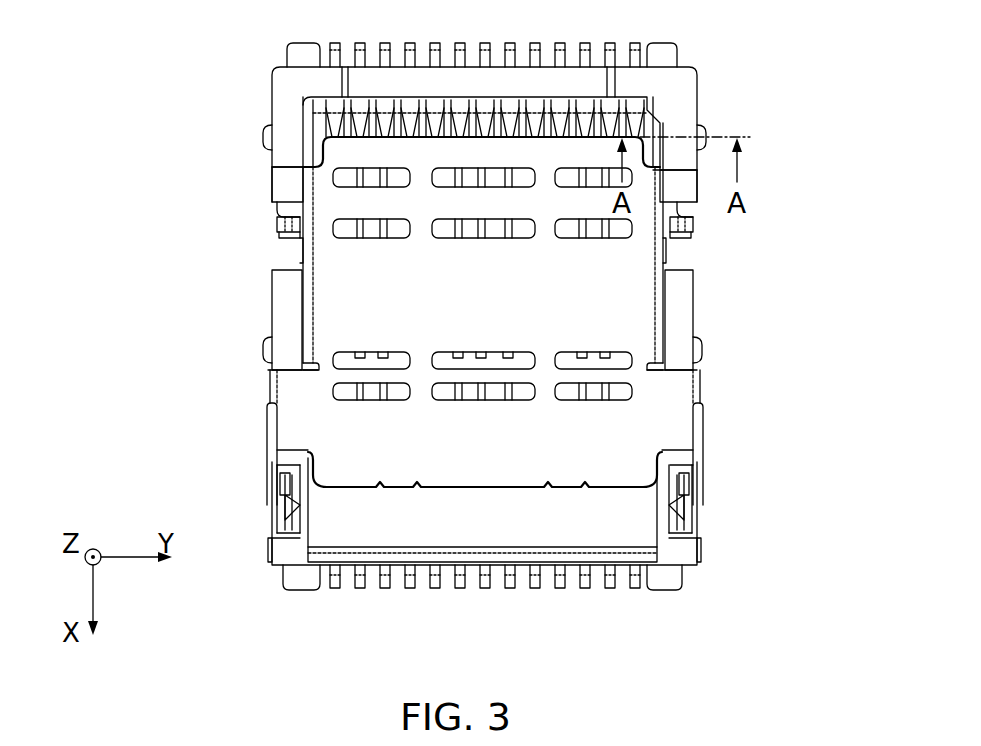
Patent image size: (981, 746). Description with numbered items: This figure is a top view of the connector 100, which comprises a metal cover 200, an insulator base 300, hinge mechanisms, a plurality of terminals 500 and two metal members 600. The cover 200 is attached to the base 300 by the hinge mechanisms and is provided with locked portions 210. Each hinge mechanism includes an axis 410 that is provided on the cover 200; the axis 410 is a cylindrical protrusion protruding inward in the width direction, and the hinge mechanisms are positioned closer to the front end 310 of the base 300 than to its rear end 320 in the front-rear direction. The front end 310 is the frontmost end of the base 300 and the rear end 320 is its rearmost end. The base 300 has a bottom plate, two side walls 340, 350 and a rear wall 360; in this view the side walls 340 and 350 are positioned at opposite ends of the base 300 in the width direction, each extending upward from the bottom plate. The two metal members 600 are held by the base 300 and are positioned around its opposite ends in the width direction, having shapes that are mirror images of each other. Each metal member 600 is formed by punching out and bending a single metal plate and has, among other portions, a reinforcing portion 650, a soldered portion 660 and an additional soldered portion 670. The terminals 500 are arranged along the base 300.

The connector 100 is at (886, 40).
The cover 200 is at (272, 384).
The locked portion 210 is at (268, 191).
The base 300 is at (690, 322).
The front end 310 is at (300, 572).
The rear end 320 is at (281, 67).
The side wall 340 is at (680, 346).
The side wall 350 is at (286, 319).
The rear wall 360 is at (473, 88).
The axis 410 is at (278, 481).
The terminal 500 is at (508, 586).
The metal member 600 is at (278, 222).
The reinforcing portion 650 is at (266, 140).
The soldered portion 660 is at (283, 235).
The additional soldered portion 670 is at (300, 43).